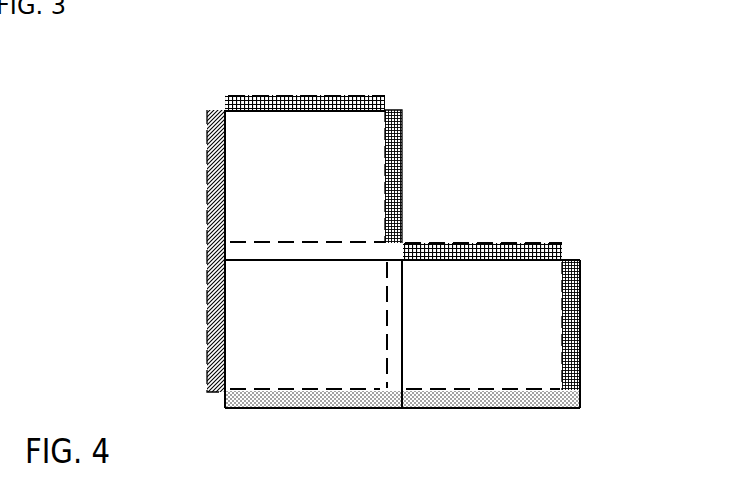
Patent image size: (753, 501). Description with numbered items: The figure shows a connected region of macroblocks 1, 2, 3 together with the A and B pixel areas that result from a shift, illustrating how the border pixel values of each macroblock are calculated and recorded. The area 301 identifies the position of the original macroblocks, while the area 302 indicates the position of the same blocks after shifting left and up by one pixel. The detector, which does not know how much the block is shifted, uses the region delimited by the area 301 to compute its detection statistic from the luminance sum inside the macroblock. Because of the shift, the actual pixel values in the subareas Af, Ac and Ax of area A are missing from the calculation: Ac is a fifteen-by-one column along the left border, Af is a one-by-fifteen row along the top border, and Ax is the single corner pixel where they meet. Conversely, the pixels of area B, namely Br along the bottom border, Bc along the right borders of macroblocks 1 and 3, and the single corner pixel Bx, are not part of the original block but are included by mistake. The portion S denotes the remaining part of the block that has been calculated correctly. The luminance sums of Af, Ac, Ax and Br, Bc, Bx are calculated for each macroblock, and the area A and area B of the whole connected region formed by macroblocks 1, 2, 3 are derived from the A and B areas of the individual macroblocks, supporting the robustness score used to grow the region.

The area identifying the original macroblock position 301 is at (403, 147).
The area indicating the shifted block position 302 is at (348, 87).
The macroblock 1 is at (305, 259).
The macroblock 2 is at (402, 334).
The macroblock 3 is at (505, 334).
The remaining correctly calculated part of the block S is at (312, 296).
The subarea Ax of area A Ax is at (212, 96).
The subarea Ar of area A Af is at (487, 241).
The subarea Ac of area A Ac is at (213, 259).
The subarea Br of area B Br is at (375, 409).
The subarea Bc of area B Bc is at (391, 187).
The subarea Bx of area B Bx is at (582, 406).